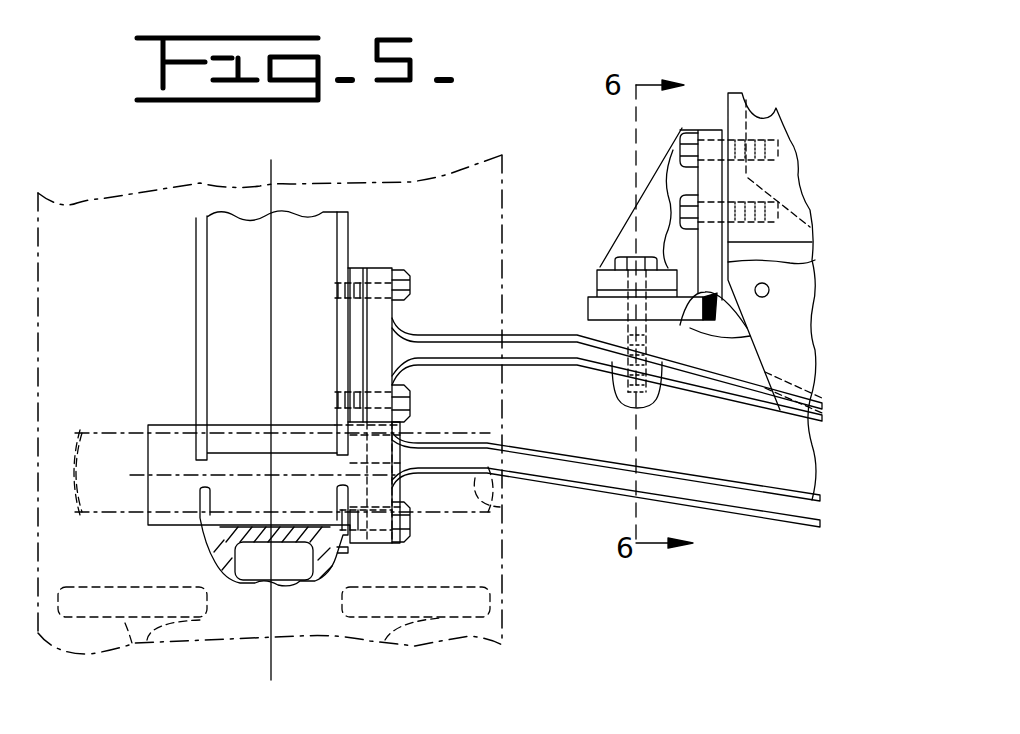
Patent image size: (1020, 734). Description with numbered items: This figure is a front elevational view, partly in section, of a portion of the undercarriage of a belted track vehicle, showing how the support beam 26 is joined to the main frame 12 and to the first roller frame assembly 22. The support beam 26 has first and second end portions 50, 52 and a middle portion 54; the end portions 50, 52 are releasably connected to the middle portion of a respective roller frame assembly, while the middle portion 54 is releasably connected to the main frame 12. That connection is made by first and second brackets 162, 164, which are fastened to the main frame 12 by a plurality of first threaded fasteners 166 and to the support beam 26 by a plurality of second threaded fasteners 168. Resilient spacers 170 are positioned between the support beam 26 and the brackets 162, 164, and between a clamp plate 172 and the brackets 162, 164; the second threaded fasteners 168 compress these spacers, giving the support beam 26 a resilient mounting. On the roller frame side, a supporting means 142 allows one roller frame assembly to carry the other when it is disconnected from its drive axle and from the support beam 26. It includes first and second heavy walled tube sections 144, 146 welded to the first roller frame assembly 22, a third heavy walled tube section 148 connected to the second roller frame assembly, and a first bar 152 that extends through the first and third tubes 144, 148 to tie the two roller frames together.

The main frame 12 is at (790, 178).
The first roller frame assembly 22 is at (196, 285).
The support beam 26 is at (560, 472).
The first end portion 50 is at (607, 348).
The second end portion 52 is at (422, 330).
The middle portion 54 is at (748, 410).
The supporting means 142 is at (270, 416).
The first heavy walled tube section 144 is at (225, 496).
The second heavy walled tube section 146 is at (176, 520).
The third heavy walled tube section 148 is at (352, 256).
The first bar 152 is at (80, 398).
The first bracket 162 is at (797, 215).
The second bracket 164 is at (713, 267).
The first threaded fasteners 166 is at (680, 217).
The second threaded fasteners 168 is at (610, 258).
The resilient spacers 170 is at (735, 330).
The clamp plate 172 is at (598, 283).